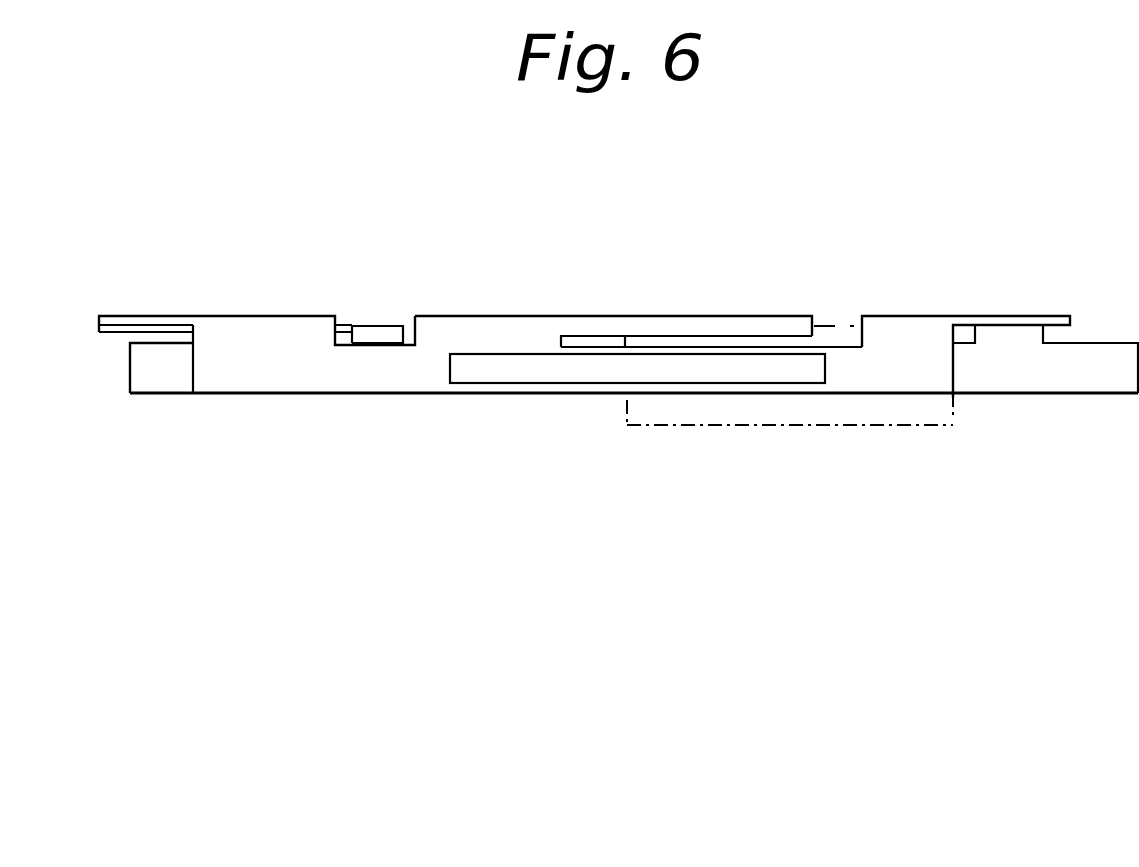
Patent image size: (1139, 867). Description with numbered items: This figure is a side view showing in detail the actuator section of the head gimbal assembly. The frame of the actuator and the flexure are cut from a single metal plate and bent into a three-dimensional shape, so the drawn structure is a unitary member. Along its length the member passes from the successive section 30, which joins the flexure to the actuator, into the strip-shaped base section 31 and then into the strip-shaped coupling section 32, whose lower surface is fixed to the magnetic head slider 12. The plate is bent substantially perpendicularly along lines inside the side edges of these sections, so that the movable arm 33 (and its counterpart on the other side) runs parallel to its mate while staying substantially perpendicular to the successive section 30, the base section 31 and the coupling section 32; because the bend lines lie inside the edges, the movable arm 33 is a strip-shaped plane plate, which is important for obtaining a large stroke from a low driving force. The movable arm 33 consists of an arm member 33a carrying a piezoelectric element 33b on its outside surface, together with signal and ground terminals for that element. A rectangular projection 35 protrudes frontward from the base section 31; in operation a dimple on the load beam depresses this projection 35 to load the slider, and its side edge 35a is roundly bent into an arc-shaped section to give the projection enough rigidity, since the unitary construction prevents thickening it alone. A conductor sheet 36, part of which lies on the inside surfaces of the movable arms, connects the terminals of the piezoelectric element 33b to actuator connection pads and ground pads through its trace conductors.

The magnetic head slider 12 is at (793, 427).
The successive section 30 is at (248, 320).
The base section 31 is at (467, 313).
The coupling section 32 is at (927, 317).
The movable arm 33 is at (862, 383).
The arm member 33a is at (840, 357).
The piezoelectric element 33b is at (525, 363).
The projection 35 is at (680, 317).
The side edge 35a is at (752, 327).
The conductor sheet 36 is at (162, 383).